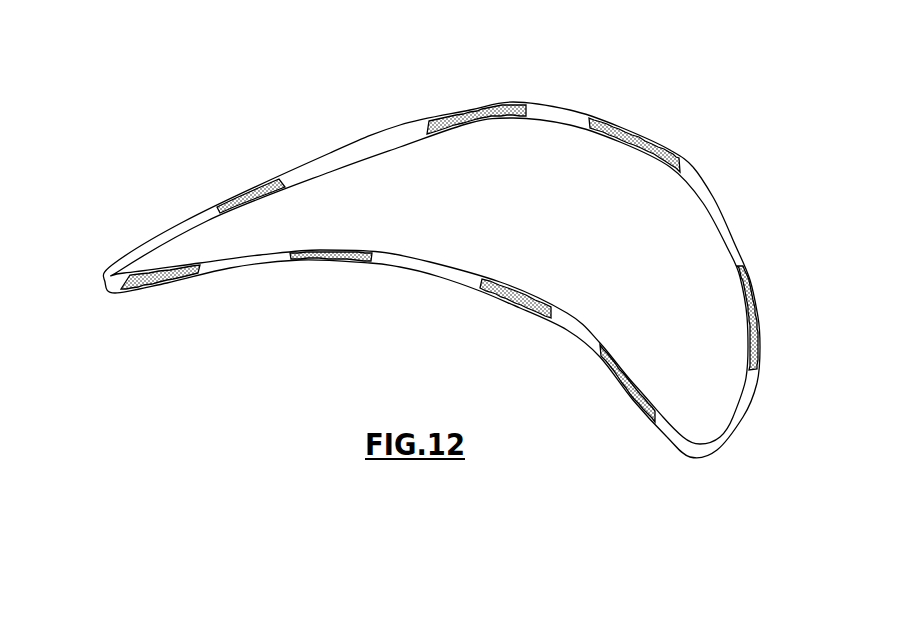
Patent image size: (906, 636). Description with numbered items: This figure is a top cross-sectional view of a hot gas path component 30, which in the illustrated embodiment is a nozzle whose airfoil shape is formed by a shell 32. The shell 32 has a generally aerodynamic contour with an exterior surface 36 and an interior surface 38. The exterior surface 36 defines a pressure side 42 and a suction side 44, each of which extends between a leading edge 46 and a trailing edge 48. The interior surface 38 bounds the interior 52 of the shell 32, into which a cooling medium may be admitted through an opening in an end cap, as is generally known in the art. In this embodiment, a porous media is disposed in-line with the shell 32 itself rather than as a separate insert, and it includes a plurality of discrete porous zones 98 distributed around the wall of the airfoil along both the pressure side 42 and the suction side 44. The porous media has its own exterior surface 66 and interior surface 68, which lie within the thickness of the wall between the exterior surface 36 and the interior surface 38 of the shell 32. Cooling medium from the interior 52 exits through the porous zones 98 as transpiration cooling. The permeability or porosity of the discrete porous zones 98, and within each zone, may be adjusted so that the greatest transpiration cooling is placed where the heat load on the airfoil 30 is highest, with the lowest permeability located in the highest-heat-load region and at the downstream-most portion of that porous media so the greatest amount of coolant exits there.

The hot gas path component 30 is at (416, 265).
The shell 32 is at (734, 377).
The exterior surface 36 is at (716, 198).
The interior surface 38 is at (372, 154).
The pressure side 42 is at (455, 308).
The suction side 44 is at (402, 134).
The leading edge 46 is at (712, 472).
The trailing edge 48 is at (92, 300).
The interior 52 is at (429, 281).
The exterior surface 66 is at (750, 278).
The interior surface 68 is at (636, 144).
The discrete porous zones 98 is at (261, 186).